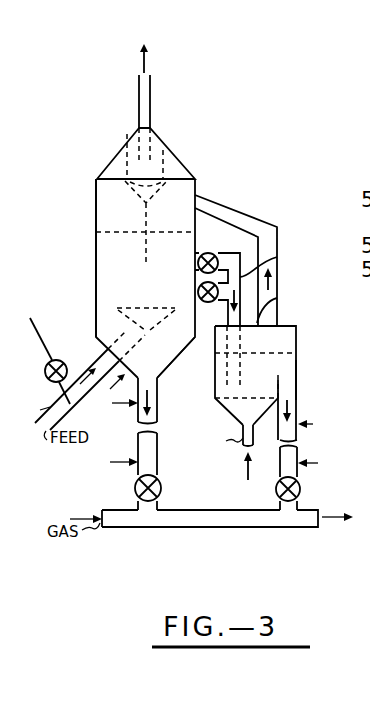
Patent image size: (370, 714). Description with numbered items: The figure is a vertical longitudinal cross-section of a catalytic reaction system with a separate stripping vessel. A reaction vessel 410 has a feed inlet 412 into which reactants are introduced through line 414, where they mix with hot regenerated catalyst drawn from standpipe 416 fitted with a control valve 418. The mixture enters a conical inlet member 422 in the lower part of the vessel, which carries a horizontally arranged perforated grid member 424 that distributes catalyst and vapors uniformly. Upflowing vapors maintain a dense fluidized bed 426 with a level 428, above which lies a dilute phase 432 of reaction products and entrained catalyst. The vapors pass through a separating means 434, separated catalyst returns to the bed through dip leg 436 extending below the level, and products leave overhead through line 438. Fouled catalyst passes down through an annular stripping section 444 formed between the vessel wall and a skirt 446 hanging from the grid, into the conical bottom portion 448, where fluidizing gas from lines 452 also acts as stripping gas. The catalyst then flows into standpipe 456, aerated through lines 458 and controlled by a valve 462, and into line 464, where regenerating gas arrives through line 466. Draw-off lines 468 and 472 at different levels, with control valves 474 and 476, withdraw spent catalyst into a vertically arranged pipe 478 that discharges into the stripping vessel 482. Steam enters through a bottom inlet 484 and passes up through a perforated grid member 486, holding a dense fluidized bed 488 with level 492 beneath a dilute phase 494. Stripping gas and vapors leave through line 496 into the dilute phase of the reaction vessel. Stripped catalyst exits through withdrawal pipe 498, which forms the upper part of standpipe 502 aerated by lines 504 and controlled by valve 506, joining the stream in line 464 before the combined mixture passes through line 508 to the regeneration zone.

The reaction vessel 410 is at (198, 181).
The feed inlet 412 is at (80, 389).
The line 414 is at (43, 409).
The standpipe 416 is at (48, 348).
The control valve 418 is at (47, 379).
The conical inlet member 422 is at (148, 336).
The perforated grid member 424 is at (121, 308).
The dense fluidized bed 426 is at (96, 252).
The level 428 is at (102, 232).
The dilute phase 432 is at (100, 197).
The separating means 434 is at (122, 158).
The dip leg 436 is at (148, 219).
The line 438 is at (151, 92).
The annular stripping section 444 is at (105, 300).
The skirt 446 is at (116, 310).
The conical bottom portion 448 is at (168, 351).
The lines 452 is at (160, 395).
The standpipe 456 is at (135, 413).
The lines 458 is at (110, 462).
The control valve 462 is at (134, 488).
The line 464 is at (167, 515).
The line 466 is at (110, 514).
The draw-off line 468 is at (200, 248).
The draw-off line 472 is at (198, 265).
The control valve 474 is at (222, 258).
The control valve 476 is at (198, 293).
The vertically arranged pipe 478 is at (277, 262).
The stripping vessel 482 is at (297, 333).
The bottom inlet 484 is at (241, 447).
The perforated grid member 486 is at (268, 393).
The dense fluidized bed 488 is at (297, 353).
The level 492 is at (242, 350).
The dilute phase 494 is at (277, 300).
The line 496 is at (277, 218).
The withdrawal pipe 498 is at (297, 375).
The standpipe 502 is at (307, 397).
The lines 504 is at (316, 425).
The control valve 506 is at (302, 485).
The line 508 is at (312, 517).